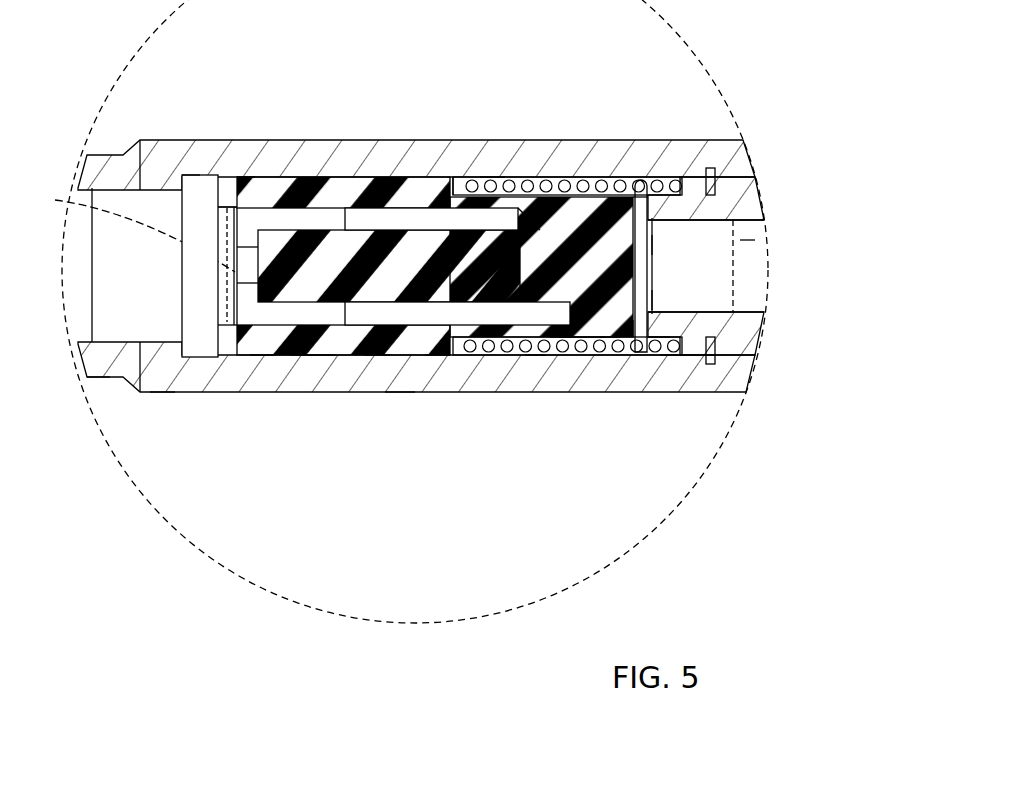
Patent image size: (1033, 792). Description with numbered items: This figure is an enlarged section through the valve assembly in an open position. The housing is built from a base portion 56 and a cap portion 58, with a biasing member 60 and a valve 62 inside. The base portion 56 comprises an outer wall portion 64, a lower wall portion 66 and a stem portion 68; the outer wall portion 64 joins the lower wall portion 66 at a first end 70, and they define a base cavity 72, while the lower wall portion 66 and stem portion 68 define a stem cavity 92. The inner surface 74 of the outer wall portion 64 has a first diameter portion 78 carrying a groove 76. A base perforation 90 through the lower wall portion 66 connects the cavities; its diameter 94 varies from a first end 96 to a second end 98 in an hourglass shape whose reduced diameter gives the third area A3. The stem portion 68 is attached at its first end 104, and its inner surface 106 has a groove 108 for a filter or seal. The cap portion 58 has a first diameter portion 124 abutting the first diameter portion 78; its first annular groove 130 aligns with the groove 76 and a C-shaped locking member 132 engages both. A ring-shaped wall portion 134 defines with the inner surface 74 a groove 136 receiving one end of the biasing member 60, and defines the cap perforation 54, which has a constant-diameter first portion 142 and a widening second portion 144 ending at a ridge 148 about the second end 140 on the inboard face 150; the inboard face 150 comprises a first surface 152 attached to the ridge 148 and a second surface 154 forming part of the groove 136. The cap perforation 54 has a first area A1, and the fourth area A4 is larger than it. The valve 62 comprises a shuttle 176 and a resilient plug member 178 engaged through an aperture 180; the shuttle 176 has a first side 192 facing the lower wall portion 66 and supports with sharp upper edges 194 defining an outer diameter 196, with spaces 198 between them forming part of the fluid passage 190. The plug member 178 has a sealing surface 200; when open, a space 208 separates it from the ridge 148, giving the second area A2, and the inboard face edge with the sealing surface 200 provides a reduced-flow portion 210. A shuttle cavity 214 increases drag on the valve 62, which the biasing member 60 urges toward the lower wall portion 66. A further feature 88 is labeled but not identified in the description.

The cap perforation 54 is at (727, 276).
The base portion 56 is at (162, 395).
The cap portion 58 is at (742, 383).
The biasing member 60 is at (492, 177).
The valve 62 is at (437, 357).
The outer wall portion 64 is at (535, 355).
The lower wall portion 66 is at (228, 360).
The stem portion 68 is at (98, 372).
The first end 70 is at (258, 357).
The base cavity 72 is at (298, 357).
The inner surface 74 is at (345, 357).
The groove 76 is at (733, 355).
The first diameter portion 78 is at (560, 345).
The housing wall 88 is at (400, 393).
The base perforation 90 is at (228, 207).
The stem cavity 92 is at (184, 175).
The diameter 94 is at (240, 177).
The first end 96 is at (268, 222).
The second end 98 is at (224, 207).
The first end 104 is at (233, 340).
The inner surface 106 is at (138, 343).
The groove 108 is at (192, 358).
The first diameter portion 124 is at (757, 177).
The first annular groove 130 is at (710, 175).
The locking member 132 is at (712, 364).
The wall portion 134 is at (700, 355).
The groove 136 is at (673, 355).
The second end 140 is at (600, 233).
The first portion 142 is at (743, 292).
The second portion 144 is at (640, 215).
The ridge 148 is at (610, 345).
The inboard face 150 is at (633, 345).
The first surface 152 is at (650, 230).
The second surface 154 is at (657, 355).
The shuttle 176 is at (323, 160).
The plug member 178 is at (348, 260).
The aperture 180 is at (528, 177).
The fluid passage 190 is at (522, 222).
The first side 192 is at (520, 357).
The upper edge 194 is at (463, 178).
The outer diameter 196 is at (378, 357).
The spaces 198 is at (300, 190).
The sealing surface 200 is at (572, 340).
The space 208 is at (593, 340).
The portion 210 is at (640, 195).
The shuttle cavity 214 is at (322, 357).
The first area A1 is at (733, 255).
The second area A2 is at (650, 312).
The third area A3 is at (131, 231).
The fourth area A4 is at (650, 248).